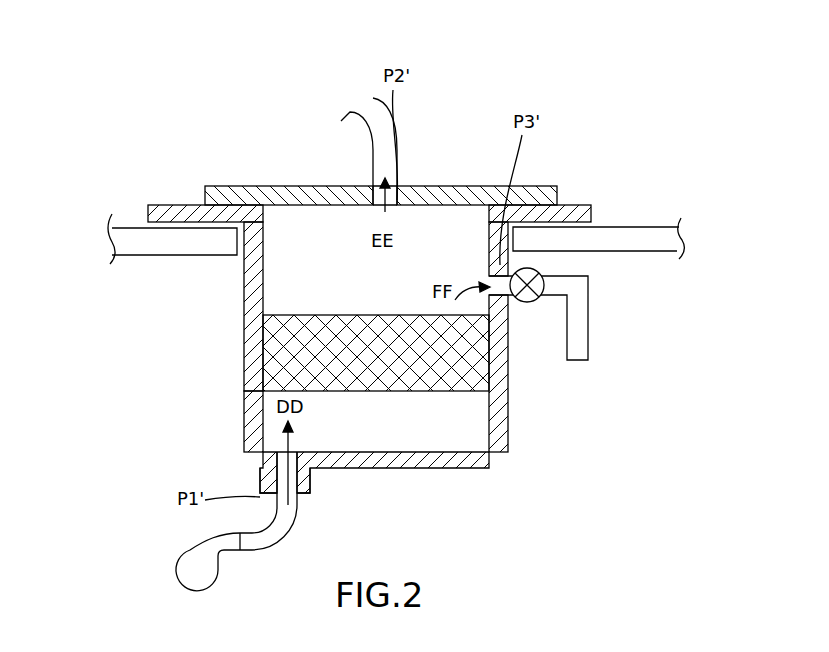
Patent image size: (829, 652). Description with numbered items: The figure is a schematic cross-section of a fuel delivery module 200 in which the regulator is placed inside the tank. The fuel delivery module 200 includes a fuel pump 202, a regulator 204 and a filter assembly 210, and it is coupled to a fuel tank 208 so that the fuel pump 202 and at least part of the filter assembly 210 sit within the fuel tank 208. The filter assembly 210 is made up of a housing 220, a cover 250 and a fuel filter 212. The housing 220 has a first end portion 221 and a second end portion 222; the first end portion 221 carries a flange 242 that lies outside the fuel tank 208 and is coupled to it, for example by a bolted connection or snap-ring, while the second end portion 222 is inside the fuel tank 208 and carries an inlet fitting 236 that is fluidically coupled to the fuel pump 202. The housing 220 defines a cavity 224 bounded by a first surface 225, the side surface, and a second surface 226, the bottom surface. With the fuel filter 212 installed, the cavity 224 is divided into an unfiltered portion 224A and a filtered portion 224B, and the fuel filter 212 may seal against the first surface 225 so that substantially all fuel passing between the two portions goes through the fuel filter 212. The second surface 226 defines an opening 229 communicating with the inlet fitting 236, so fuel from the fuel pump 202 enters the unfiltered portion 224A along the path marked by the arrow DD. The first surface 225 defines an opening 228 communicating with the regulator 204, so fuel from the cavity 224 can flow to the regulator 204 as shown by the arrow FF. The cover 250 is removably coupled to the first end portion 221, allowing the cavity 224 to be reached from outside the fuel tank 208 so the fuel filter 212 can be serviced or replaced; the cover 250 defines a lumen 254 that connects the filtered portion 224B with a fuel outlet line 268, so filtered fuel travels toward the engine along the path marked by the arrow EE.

The fuel delivery module 200 is at (154, 76).
The fuel pump 202 is at (174, 562).
The regulator 204 is at (533, 268).
The fuel tank 208 is at (665, 238).
The filter assembly 210 is at (116, 362).
The fuel filter 212 is at (312, 356).
The housing 220 is at (246, 337).
The first end portion 221 is at (242, 252).
The second end portion 222 is at (248, 430).
The cavity 224 is at (445, 430).
The unfiltered portion 224A is at (472, 418).
The filtered portion 224B is at (310, 267).
The first surface 225 is at (489, 228).
The second surface 226 is at (398, 447).
The opening 228 is at (487, 274).
The opening 229 is at (262, 438).
The inlet fitting 236 is at (312, 491).
The flange 242 is at (184, 205).
The cover 250 is at (281, 186).
The lumen 254 is at (368, 186).
The fuel outlet line 268 is at (349, 112).